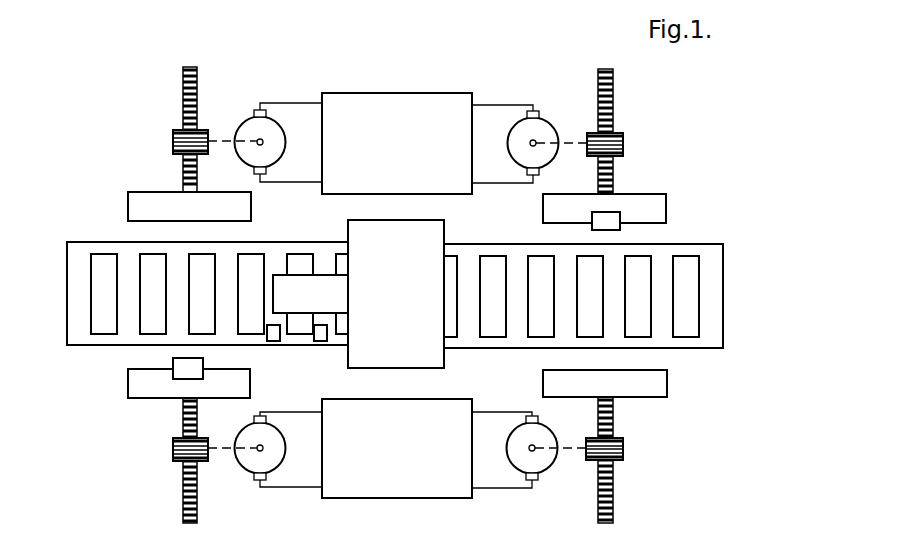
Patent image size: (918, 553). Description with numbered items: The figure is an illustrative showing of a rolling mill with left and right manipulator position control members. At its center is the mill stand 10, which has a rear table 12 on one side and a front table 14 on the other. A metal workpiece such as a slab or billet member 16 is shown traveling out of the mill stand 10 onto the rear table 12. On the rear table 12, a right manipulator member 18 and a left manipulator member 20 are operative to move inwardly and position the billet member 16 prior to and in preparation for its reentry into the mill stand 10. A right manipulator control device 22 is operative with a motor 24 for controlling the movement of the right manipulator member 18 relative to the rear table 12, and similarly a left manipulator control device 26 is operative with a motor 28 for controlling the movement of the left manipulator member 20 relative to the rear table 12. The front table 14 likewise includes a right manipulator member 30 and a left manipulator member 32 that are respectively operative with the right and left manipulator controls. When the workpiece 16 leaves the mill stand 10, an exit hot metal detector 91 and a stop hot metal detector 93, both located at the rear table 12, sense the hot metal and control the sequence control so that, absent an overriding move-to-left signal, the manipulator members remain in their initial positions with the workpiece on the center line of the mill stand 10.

The mill stand 10 is at (444, 230).
The rear table 12 is at (67, 294).
The front table 14 is at (723, 297).
The billet member 16 is at (320, 282).
The right manipulator member 18 is at (128, 200).
The left manipulator member 20 is at (128, 387).
The right manipulator control device 22 is at (442, 93).
The motor 24 is at (237, 128).
The left manipulator control device 26 is at (360, 500).
The motor 28 is at (242, 461).
The right manipulator member 30 is at (666, 205).
The left manipulator member 32 is at (667, 390).
The exit hot metal detector 91 is at (320, 342).
The stop hot metal detector 93 is at (270, 342).